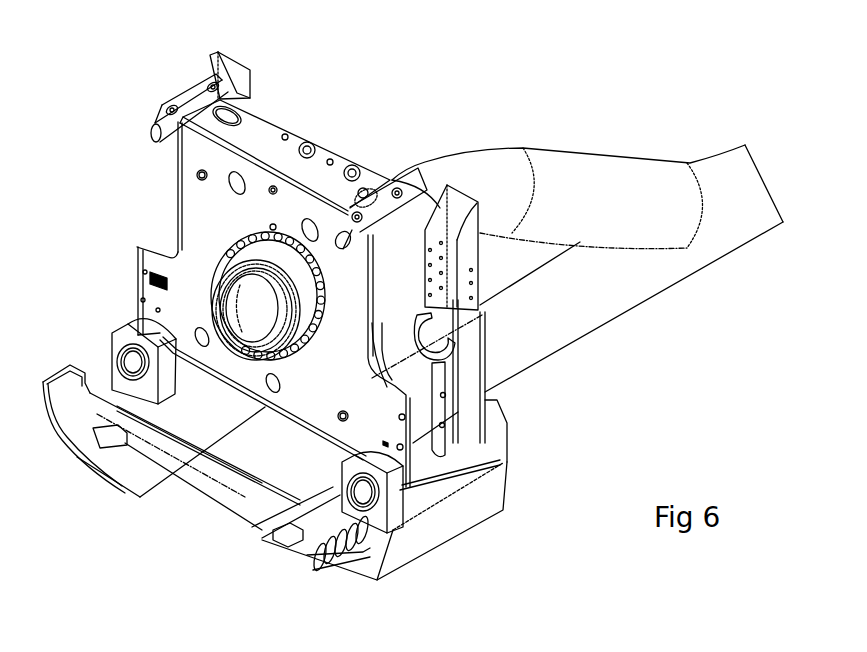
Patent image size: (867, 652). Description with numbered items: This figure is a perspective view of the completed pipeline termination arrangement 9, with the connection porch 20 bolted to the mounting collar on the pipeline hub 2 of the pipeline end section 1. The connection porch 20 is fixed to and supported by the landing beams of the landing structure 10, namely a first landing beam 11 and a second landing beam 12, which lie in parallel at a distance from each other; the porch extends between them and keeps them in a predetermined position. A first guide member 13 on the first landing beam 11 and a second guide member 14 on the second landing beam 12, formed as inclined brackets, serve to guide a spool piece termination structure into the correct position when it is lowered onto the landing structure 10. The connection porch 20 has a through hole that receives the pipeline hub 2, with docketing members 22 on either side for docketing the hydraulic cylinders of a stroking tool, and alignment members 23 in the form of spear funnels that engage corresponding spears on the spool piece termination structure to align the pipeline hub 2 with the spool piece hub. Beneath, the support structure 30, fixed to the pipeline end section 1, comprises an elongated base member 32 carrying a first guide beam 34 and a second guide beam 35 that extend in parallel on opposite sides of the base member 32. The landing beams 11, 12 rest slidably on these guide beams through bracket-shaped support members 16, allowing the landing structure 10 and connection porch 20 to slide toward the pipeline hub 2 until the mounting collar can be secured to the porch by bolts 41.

The pipeline termination arrangement 9 is at (331, 80).
The pipeline end section 1 is at (587, 139).
The pipeline hub 2 is at (212, 312).
The landing structure 10 is at (499, 541).
The first landing beam 11 is at (442, 530).
The second landing beam 12 is at (117, 393).
The first guide member 13 is at (328, 562).
The second guide member 14 is at (64, 382).
The support members 16 is at (115, 440).
The connection porch 20 is at (330, 147).
The docketing members 22 is at (417, 320).
The alignment members 23 is at (117, 338).
The support structure 30 is at (586, 403).
The elongated base member 32 is at (594, 318).
The first elongated guide beam 34 is at (320, 515).
The second elongated guide beam 35 is at (133, 472).
The bolts 41 is at (320, 347).